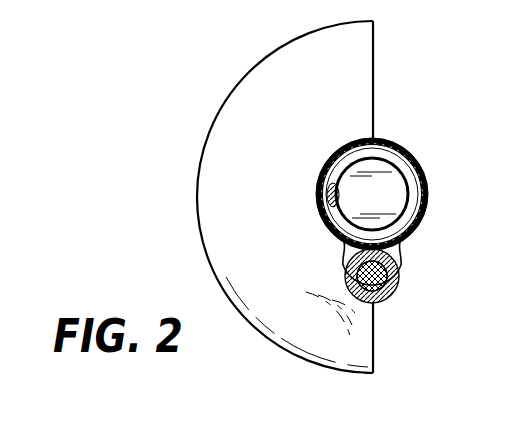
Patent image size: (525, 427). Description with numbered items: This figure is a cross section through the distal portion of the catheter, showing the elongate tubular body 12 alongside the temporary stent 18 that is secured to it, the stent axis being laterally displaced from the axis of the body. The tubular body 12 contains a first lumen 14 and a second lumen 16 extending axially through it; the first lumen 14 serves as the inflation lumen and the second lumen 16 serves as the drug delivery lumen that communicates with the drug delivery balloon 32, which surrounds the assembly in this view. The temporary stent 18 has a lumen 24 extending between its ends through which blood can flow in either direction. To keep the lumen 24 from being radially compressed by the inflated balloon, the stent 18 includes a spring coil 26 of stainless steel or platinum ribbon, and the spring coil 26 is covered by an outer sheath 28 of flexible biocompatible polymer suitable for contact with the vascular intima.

The drug delivery balloon 32 is at (237, 112).
The temporary stent 18 is at (397, 139).
The outer sheath 28 is at (423, 172).
The spring coil 26 is at (422, 204).
The lumen 24 is at (402, 195).
The first lumen 14 is at (395, 262).
The second lumen 16 is at (399, 277).
The tubular body 12 is at (391, 300).